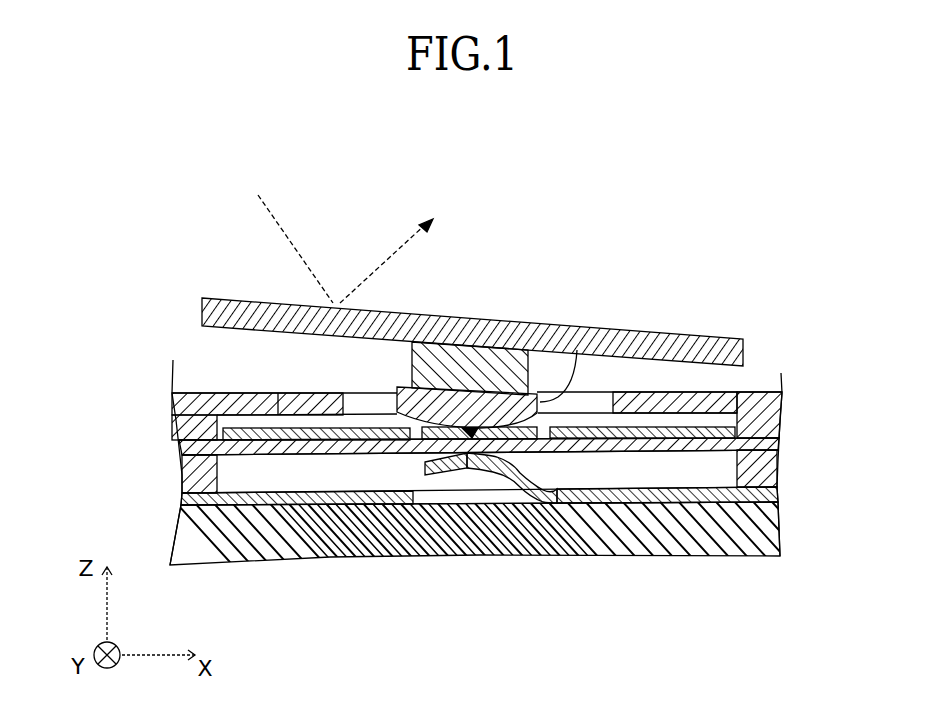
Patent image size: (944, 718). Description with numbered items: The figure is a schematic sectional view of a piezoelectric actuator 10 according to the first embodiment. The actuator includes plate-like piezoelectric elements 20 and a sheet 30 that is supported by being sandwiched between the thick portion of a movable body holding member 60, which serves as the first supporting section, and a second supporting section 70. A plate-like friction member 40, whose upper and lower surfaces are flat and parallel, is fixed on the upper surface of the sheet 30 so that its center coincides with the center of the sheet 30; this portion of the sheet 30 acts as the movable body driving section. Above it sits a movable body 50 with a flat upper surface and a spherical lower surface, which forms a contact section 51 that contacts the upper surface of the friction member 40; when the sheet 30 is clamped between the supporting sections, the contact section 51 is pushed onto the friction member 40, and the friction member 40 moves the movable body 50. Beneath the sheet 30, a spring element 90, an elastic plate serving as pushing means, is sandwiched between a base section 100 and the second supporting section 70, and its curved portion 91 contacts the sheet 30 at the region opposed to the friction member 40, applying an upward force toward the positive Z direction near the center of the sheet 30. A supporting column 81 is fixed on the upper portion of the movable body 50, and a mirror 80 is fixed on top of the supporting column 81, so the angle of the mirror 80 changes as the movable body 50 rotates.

The piezoelectric actuator 10 is at (752, 233).
The piezoelectric element 20 is at (312, 428).
The sheet 30 is at (785, 443).
The friction member 40 is at (395, 405).
The movable body 50 is at (577, 350).
The contact section 51 is at (463, 458).
The movable body holding member 60 is at (232, 392).
The second supporting section 70 is at (770, 472).
The mirror 80 is at (467, 317).
The supporting column 81 is at (411, 370).
The spring element 90 is at (533, 485).
The curved portion 91 is at (475, 440).
The base section 100 is at (762, 527).